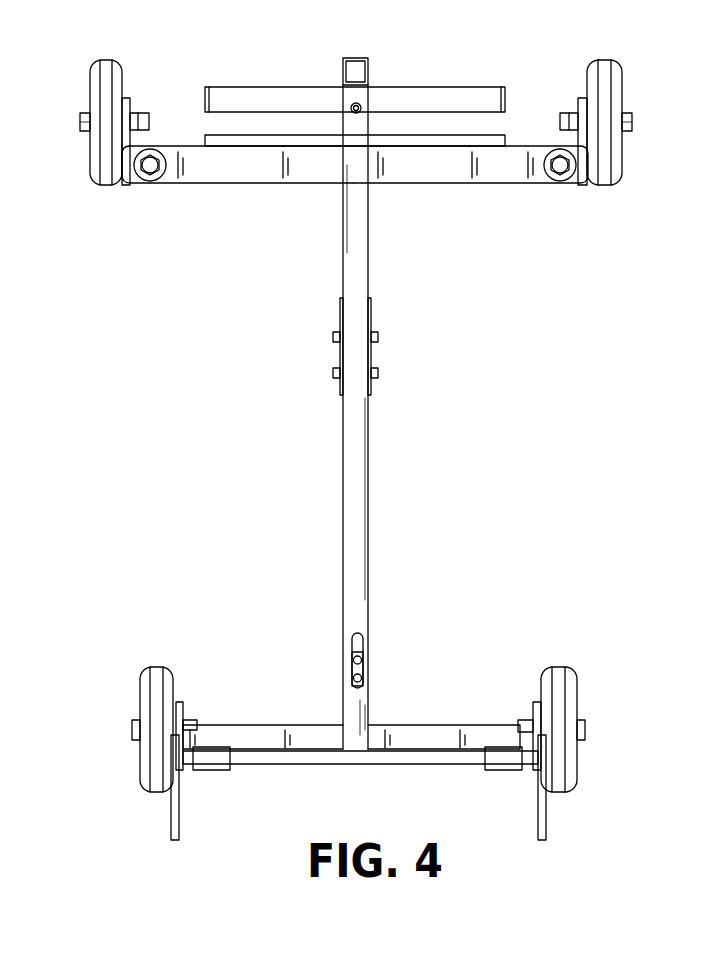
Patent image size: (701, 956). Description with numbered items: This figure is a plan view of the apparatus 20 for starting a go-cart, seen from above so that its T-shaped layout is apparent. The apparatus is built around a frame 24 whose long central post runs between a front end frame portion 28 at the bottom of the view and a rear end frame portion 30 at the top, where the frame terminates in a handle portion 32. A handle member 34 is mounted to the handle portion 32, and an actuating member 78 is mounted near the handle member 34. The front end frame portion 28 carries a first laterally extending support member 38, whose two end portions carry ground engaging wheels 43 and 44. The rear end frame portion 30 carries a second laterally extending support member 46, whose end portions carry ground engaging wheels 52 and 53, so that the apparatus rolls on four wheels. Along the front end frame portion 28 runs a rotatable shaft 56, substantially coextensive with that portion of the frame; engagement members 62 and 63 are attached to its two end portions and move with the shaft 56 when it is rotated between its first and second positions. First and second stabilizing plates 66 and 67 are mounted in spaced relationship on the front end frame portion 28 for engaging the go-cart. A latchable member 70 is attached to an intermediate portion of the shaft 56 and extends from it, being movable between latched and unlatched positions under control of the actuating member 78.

The apparatus for starting a go-cart 20 is at (262, 405).
The frame 24 is at (343, 527).
The front end frame portion 28 is at (263, 737).
The rear end frame portion 30 is at (205, 175).
The handle portion 32 is at (343, 70).
The handle member 34 is at (428, 98).
The first laterally extending support member 38 is at (418, 740).
The ground engaging wheel 43 is at (158, 765).
The ground engaging wheel 44 is at (556, 777).
The second laterally extending support member 46 is at (420, 165).
The ground engaging wheel 52 is at (105, 143).
The ground engaging wheel 53 is at (602, 160).
The rotatable shaft 56 is at (362, 765).
The engagement member 62 is at (173, 828).
The engagement member 63 is at (542, 818).
The first stabilizing plate 66 is at (215, 770).
The second stabilizing plate 67 is at (500, 770).
The latchable member 70 is at (358, 705).
The actuating member 78 is at (478, 135).